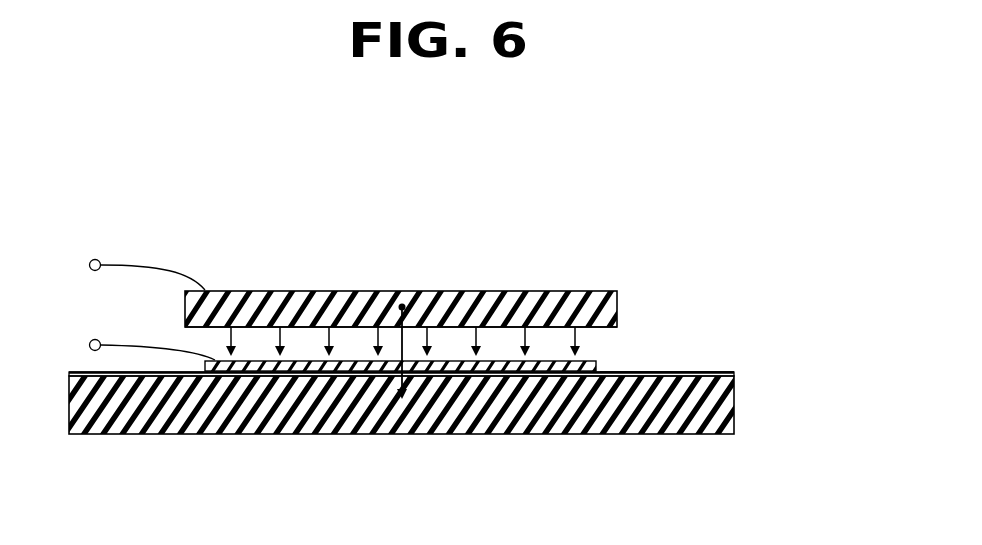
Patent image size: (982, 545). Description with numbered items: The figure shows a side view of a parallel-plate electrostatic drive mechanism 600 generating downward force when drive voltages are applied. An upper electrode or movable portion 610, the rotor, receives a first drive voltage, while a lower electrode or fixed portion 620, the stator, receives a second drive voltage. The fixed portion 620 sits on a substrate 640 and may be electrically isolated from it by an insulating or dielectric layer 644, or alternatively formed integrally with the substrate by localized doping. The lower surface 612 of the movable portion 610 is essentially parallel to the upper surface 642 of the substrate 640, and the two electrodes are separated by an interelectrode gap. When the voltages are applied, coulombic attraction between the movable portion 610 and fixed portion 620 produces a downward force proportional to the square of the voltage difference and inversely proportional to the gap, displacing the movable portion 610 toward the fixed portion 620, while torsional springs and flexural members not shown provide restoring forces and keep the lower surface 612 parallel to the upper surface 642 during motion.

The parallel-plate electrostatic drive mechanism 600 is at (139, 142).
The upper electrode or movable portion 610 is at (617, 291).
The lower surface of the movable portion 612 is at (584, 327).
The lower electrode or fixed portion 620 is at (618, 370).
The substrate 640 is at (735, 411).
The upper surface of the substrate 642 is at (733, 372).
The insulating layer or dielectric layer 644 is at (719, 372).